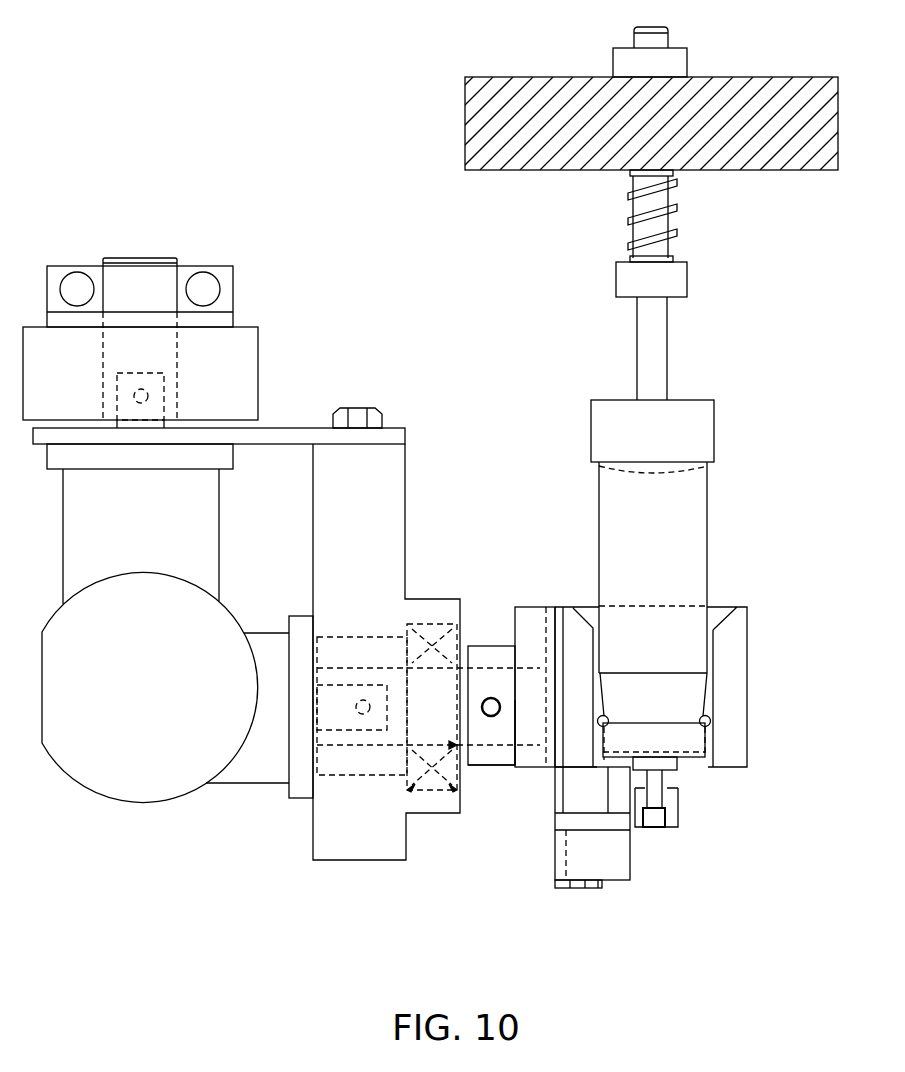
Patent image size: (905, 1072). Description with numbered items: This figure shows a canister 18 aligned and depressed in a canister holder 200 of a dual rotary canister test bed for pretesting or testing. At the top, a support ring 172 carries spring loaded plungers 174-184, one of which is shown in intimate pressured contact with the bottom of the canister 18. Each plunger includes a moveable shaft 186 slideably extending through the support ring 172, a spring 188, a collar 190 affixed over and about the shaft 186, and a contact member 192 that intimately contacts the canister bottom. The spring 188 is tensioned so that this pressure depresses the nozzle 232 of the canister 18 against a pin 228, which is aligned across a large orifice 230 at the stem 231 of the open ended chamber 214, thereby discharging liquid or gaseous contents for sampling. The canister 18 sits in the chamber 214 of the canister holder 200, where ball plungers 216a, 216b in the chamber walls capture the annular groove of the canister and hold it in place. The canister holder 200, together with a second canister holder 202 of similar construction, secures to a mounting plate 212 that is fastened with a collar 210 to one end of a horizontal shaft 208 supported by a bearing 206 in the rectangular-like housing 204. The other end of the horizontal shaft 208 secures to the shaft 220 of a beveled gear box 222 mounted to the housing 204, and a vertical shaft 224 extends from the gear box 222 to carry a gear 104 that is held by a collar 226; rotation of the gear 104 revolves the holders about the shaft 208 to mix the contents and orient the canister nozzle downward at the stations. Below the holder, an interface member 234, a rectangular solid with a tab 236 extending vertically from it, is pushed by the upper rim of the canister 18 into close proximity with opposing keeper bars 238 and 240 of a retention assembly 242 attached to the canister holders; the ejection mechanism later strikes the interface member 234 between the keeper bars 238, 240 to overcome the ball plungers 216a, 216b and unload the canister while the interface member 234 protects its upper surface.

The canister 18 is at (703, 520).
The gear 104 is at (259, 369).
The support ring 172 is at (466, 117).
The spring loaded plungers 174-184 is at (573, 240).
The moveable shaft 186 is at (667, 336).
The spring 188 is at (630, 222).
The collar 190 is at (616, 276).
The contact member 192 is at (717, 431).
The canister holder 200 is at (768, 673).
The canister holder 202 is at (760, 719).
The housing 204 is at (246, 634).
The bearing 206 is at (420, 622).
The horizontal shaft 208 is at (501, 666).
The collar 210 is at (497, 768).
The mounting plate 212 is at (533, 606).
The open ended chamber 214 is at (712, 640).
The ball plunger 216a is at (600, 723).
The ball plunger 216b is at (709, 723).
The shaft 220 is at (348, 725).
The beveled gear box 222 is at (150, 623).
The vertical shaft 224 is at (151, 256).
The collar 226 is at (233, 292).
The pin 228 is at (673, 798).
The large orifice 230 is at (661, 833).
The stem 231 is at (680, 814).
The nozzle 232 is at (662, 772).
The interface member 234 is at (592, 823).
The tab 236 is at (615, 797).
The keeper bar 238 is at (582, 883).
The keeper bar 240 is at (600, 884).
The retention assembly 242 is at (555, 868).